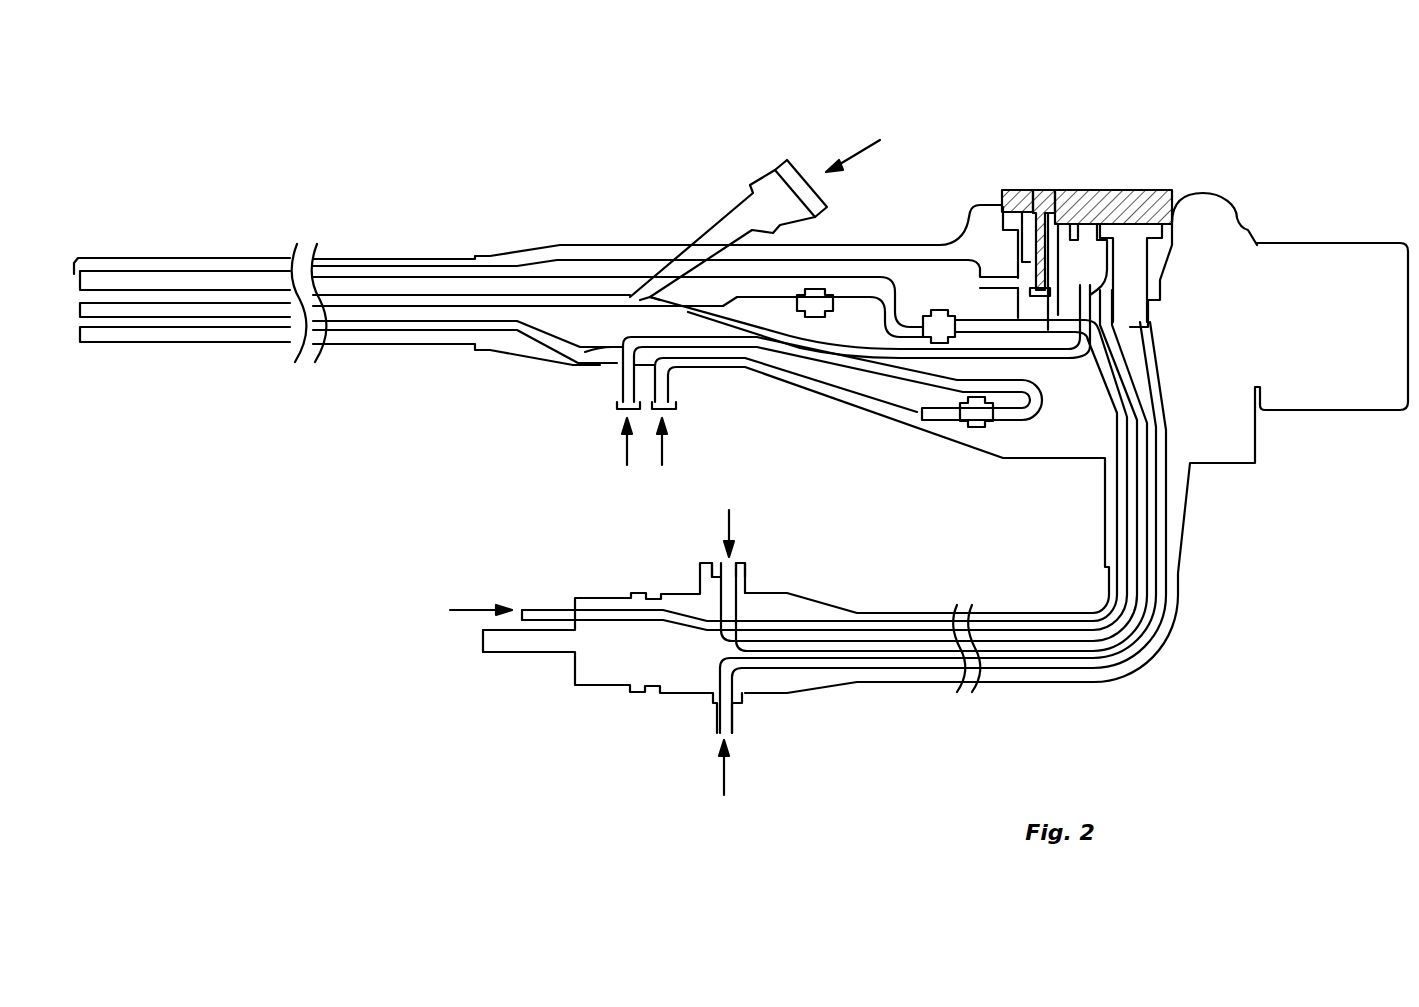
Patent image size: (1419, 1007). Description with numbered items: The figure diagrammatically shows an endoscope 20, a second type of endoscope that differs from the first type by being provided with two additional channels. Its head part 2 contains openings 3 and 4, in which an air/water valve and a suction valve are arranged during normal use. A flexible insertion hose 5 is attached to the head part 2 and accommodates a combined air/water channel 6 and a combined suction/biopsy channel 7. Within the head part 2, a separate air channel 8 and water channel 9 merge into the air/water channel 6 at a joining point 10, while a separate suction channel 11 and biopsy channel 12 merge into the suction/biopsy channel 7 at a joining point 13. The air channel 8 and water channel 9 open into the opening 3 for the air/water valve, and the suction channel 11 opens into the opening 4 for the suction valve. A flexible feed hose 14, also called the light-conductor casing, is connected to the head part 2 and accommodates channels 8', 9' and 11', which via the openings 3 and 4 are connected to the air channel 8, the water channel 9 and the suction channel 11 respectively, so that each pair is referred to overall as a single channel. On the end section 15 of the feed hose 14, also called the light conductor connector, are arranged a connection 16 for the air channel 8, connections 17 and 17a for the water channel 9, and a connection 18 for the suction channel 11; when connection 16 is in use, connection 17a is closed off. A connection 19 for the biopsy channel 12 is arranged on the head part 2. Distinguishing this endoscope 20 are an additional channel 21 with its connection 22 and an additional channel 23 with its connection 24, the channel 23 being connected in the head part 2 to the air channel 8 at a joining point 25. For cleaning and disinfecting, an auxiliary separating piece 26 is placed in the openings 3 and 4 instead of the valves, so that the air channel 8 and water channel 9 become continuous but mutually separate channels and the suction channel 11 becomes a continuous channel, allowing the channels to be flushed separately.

The head part 2 is at (1268, 222).
The opening 3 is at (1020, 252).
The opening 4 is at (1127, 272).
The flexible insertion hose 5 is at (237, 240).
The combined air/water channel 6 is at (138, 272).
The combined suction/biopsy channel 7 is at (180, 300).
The air channel 8 is at (826, 252).
The water channel 9 is at (932, 415).
The joining point 10 is at (505, 268).
The suction channel 11 is at (870, 388).
The biopsy channel 12 is at (722, 245).
The joining point 13 is at (645, 296).
The flexible feed hose 14 is at (1170, 675).
The end section 15 is at (580, 700).
The connection 16 is at (745, 583).
The connection 17 is at (545, 605).
The connection 17a is at (705, 582).
The connection 18 is at (708, 725).
The connection 19 is at (785, 165).
The endoscope 20 is at (934, 105).
The additional channel 21 is at (803, 372).
The connection 22 is at (680, 402).
The additional channel 23 is at (592, 355).
The connection 24 is at (802, 406).
The joining point 25 is at (866, 262).
The auxiliary separating piece 26 is at (1085, 200).
The channel 8' is at (1025, 594).
The channel 9' is at (925, 582).
The channel 11' is at (1029, 713).